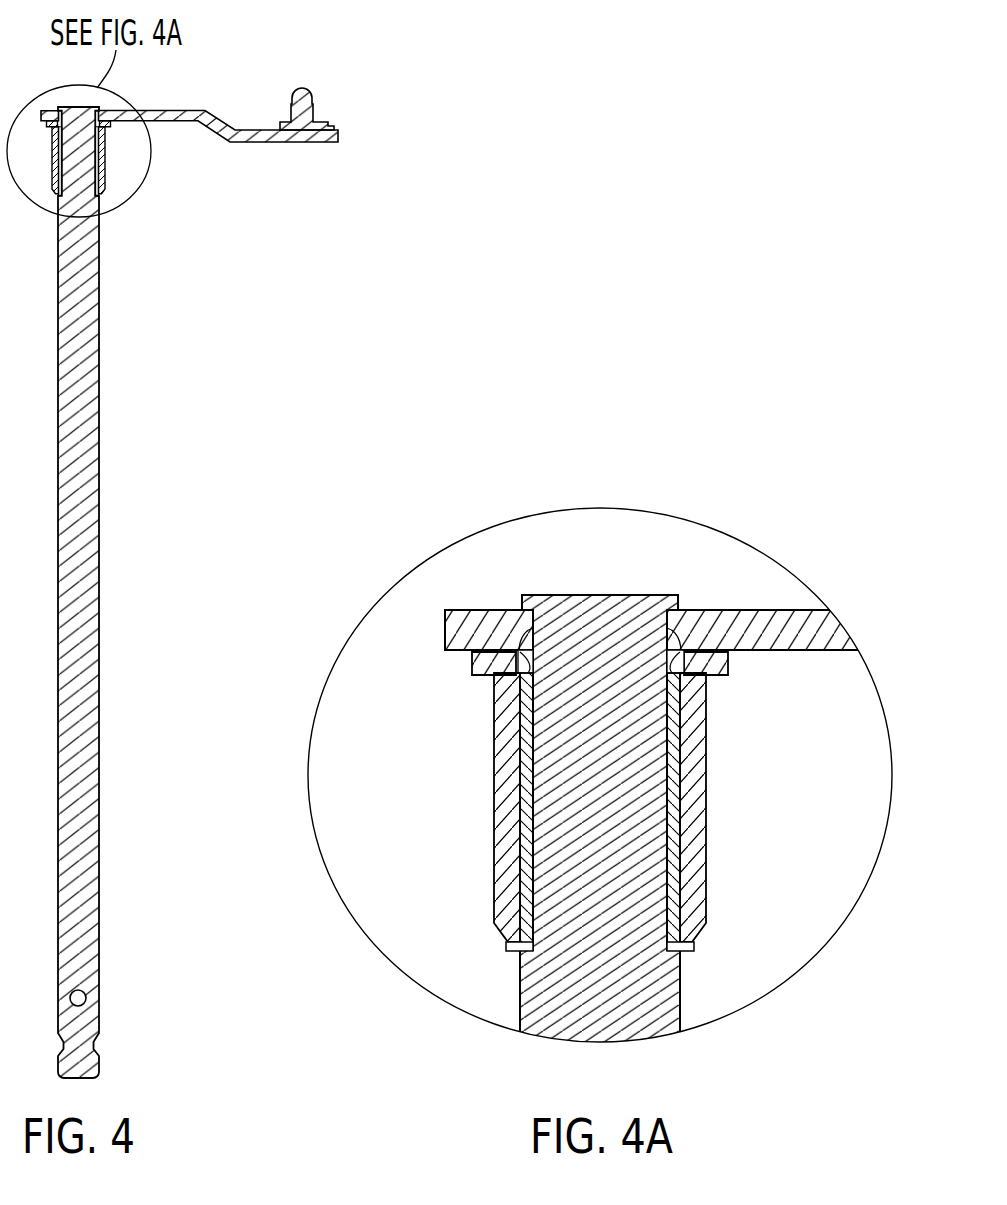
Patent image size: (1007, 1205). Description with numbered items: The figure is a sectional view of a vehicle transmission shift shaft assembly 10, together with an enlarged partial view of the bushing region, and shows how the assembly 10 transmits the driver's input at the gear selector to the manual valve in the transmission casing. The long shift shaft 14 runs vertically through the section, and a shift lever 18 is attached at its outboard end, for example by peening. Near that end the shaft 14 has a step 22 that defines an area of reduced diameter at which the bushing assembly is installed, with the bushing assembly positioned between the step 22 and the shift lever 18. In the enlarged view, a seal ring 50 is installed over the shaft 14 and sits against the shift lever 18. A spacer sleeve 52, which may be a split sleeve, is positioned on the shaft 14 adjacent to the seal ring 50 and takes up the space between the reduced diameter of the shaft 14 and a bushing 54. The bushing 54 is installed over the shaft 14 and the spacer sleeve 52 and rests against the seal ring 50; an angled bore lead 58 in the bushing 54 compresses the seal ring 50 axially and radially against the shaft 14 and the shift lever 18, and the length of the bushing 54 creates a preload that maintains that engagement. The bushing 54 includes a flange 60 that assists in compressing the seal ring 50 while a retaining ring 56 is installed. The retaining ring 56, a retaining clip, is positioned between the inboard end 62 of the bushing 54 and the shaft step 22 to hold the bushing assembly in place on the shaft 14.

In FIG. 4A, the shift shaft assembly 10 is at (735, 842).
In FIG. 4, the shift shaft 14 is at (85, 950).
In FIG. 4A, the shift shaft 14 is at (548, 980).
In FIG. 4A, the shift lever 18 is at (733, 623).
In FIG. 4A, the step 22 is at (687, 952).
In FIG. 4A, the seal ring 50 is at (527, 640).
In FIG. 4A, the spacer sleeve 52 is at (519, 709).
In FIG. 4A, the bushing 54 is at (502, 773).
In FIG. 4A, the retaining ring 56 is at (517, 945).
In FIG. 4A, the angled bore lead 58 is at (708, 677).
In FIG. 4A, the flange 60 is at (728, 665).
In FIG. 4A, the inboard end 62 is at (718, 940).